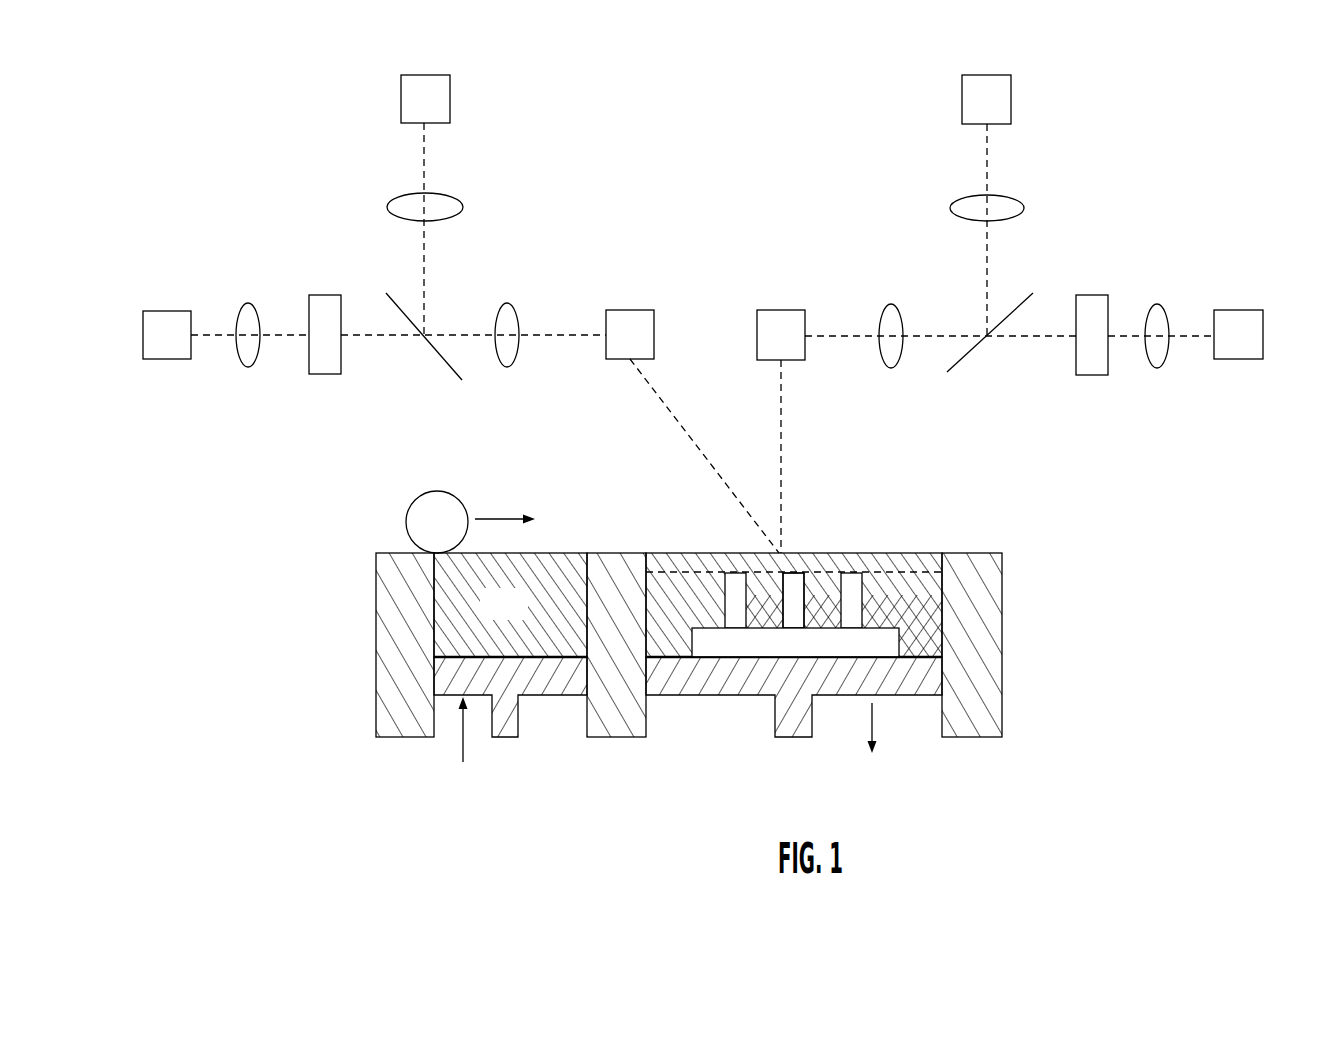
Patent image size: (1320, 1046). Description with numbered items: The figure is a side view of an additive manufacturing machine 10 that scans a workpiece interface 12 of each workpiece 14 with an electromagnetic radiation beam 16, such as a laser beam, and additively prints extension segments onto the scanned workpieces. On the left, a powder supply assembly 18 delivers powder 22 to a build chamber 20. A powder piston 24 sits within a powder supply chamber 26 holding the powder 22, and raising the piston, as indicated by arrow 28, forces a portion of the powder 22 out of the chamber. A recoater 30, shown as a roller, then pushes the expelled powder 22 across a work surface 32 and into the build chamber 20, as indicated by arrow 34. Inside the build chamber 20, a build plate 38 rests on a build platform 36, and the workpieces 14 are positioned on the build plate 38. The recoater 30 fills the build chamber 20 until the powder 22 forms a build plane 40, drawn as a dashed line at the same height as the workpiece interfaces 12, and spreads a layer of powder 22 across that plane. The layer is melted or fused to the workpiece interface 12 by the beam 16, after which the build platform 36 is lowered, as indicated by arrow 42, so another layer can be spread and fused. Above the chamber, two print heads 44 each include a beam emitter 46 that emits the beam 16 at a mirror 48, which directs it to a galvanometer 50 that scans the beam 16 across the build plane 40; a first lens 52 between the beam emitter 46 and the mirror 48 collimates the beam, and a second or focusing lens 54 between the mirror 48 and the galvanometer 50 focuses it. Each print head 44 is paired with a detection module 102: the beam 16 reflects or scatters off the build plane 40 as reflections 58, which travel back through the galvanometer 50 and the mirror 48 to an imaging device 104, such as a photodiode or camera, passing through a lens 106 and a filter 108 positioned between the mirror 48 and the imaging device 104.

The additive manufacturing machine 10 is at (248, 76).
The workpiece interface 12 is at (860, 560).
The workpiece 14 is at (793, 587).
The electromagnetic radiation beam 16 is at (423, 156).
The powder supply assembly 18 is at (345, 704).
The build chamber 20 is at (677, 586).
The powder 22 is at (527, 619).
The powder piston 24 is at (503, 740).
The powder supply chamber 26 is at (556, 572).
The arrow 28 is at (462, 745).
The recoater 30 is at (420, 494).
The work surface 32 is at (617, 553).
The arrow 34 is at (503, 518).
The build platform 36 is at (775, 730).
The build plate 38 is at (718, 655).
The build plane 40 is at (908, 570).
The arrow 42 is at (873, 730).
The print head 44 is at (592, 152).
The beam emitter 46 is at (450, 90).
The mirror 48 is at (447, 363).
The galvanometer 50 is at (628, 310).
The first lens 52 is at (389, 207).
The second or focusing lens 54 is at (518, 313).
The reflection 58 is at (215, 333).
The detection module 102 is at (236, 414).
The imaging device 104 is at (168, 311).
The lens 106 is at (256, 303).
The filter 108 is at (330, 375).